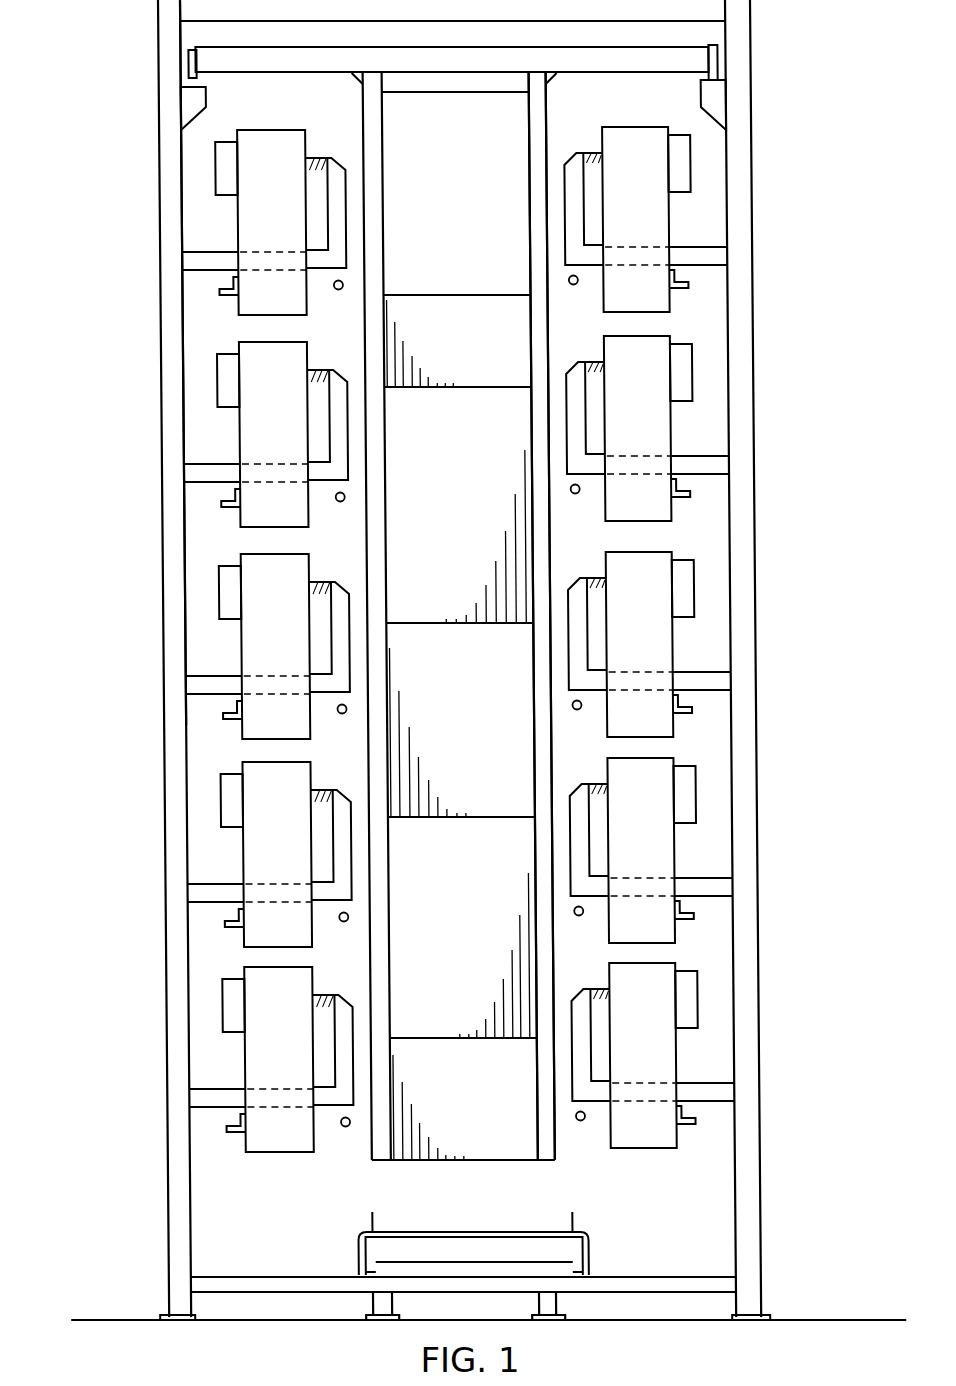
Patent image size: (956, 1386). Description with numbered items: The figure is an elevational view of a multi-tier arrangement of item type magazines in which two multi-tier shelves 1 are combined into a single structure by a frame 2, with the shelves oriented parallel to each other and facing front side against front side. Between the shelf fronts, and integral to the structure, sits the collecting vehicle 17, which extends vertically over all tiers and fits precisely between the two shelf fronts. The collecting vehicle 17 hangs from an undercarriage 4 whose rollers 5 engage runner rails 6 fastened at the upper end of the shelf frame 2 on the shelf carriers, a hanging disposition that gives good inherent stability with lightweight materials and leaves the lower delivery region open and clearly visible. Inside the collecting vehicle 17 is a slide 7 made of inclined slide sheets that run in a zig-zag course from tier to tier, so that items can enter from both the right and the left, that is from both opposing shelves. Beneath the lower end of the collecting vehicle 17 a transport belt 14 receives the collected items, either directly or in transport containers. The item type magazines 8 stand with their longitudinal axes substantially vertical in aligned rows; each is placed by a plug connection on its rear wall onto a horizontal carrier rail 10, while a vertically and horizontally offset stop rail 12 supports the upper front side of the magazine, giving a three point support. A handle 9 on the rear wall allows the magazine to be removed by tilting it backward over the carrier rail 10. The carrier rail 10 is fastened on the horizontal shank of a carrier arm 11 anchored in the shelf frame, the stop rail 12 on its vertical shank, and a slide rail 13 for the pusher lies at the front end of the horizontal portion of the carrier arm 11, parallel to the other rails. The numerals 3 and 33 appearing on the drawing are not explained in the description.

The multi-tier shelf 1 is at (483, 660).
The frame 2 is at (168, 212).
The central duct 3 is at (468, 695).
The undercarriage 4 is at (705, 62).
The rollers 5 is at (188, 58).
The runner rails 6 is at (196, 103).
The slide 7 is at (503, 538).
The item type magazine 8 is at (652, 220).
The handle 9 is at (692, 371).
The carrier rail 10 is at (235, 493).
The carrier arm 11 is at (723, 463).
The stop rail 12 is at (320, 790).
The slide rail 13 is at (573, 712).
The transport belt 14 is at (482, 1232).
The collecting vehicle 17 is at (556, 134).
The unit holder 33 is at (598, 291).